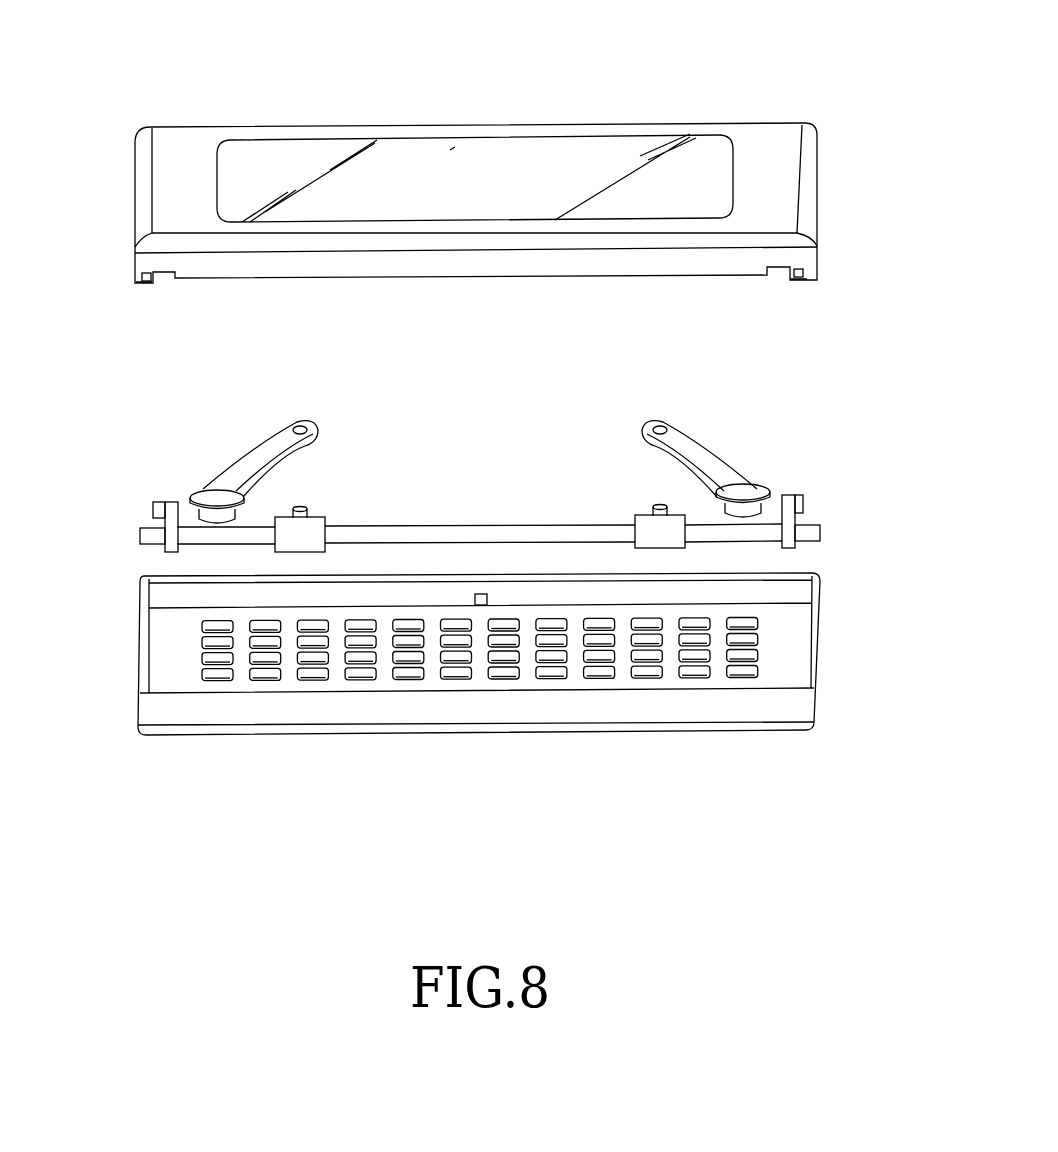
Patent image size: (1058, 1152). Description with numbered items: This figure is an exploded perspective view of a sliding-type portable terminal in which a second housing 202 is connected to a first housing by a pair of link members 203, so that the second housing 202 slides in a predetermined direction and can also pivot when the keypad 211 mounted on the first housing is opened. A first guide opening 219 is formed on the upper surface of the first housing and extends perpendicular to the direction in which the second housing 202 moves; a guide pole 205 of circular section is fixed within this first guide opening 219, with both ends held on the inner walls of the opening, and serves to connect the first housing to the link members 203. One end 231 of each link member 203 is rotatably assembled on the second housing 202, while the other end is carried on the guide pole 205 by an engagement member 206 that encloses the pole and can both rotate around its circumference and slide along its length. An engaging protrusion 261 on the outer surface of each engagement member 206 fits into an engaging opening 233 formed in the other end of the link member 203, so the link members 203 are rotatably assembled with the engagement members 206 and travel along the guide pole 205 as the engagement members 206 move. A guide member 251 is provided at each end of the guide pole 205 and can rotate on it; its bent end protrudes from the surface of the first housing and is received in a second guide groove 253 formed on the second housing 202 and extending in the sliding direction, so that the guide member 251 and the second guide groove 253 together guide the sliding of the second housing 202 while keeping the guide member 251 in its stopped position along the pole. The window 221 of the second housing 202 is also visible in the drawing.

The second housing 202 is at (730, 110).
The link members 203 is at (243, 433).
The guide pole 205 is at (128, 541).
The engagement member 206 is at (302, 553).
The keypad 211 is at (503, 676).
The first guide opening 219 is at (800, 592).
The window 221 is at (590, 150).
The one end of link member 231 is at (207, 496).
The engaging opening 233 is at (298, 426).
The guide member 251 is at (153, 506).
The second guide groove 253 is at (165, 280).
The engaging protrusion 261 is at (655, 507).